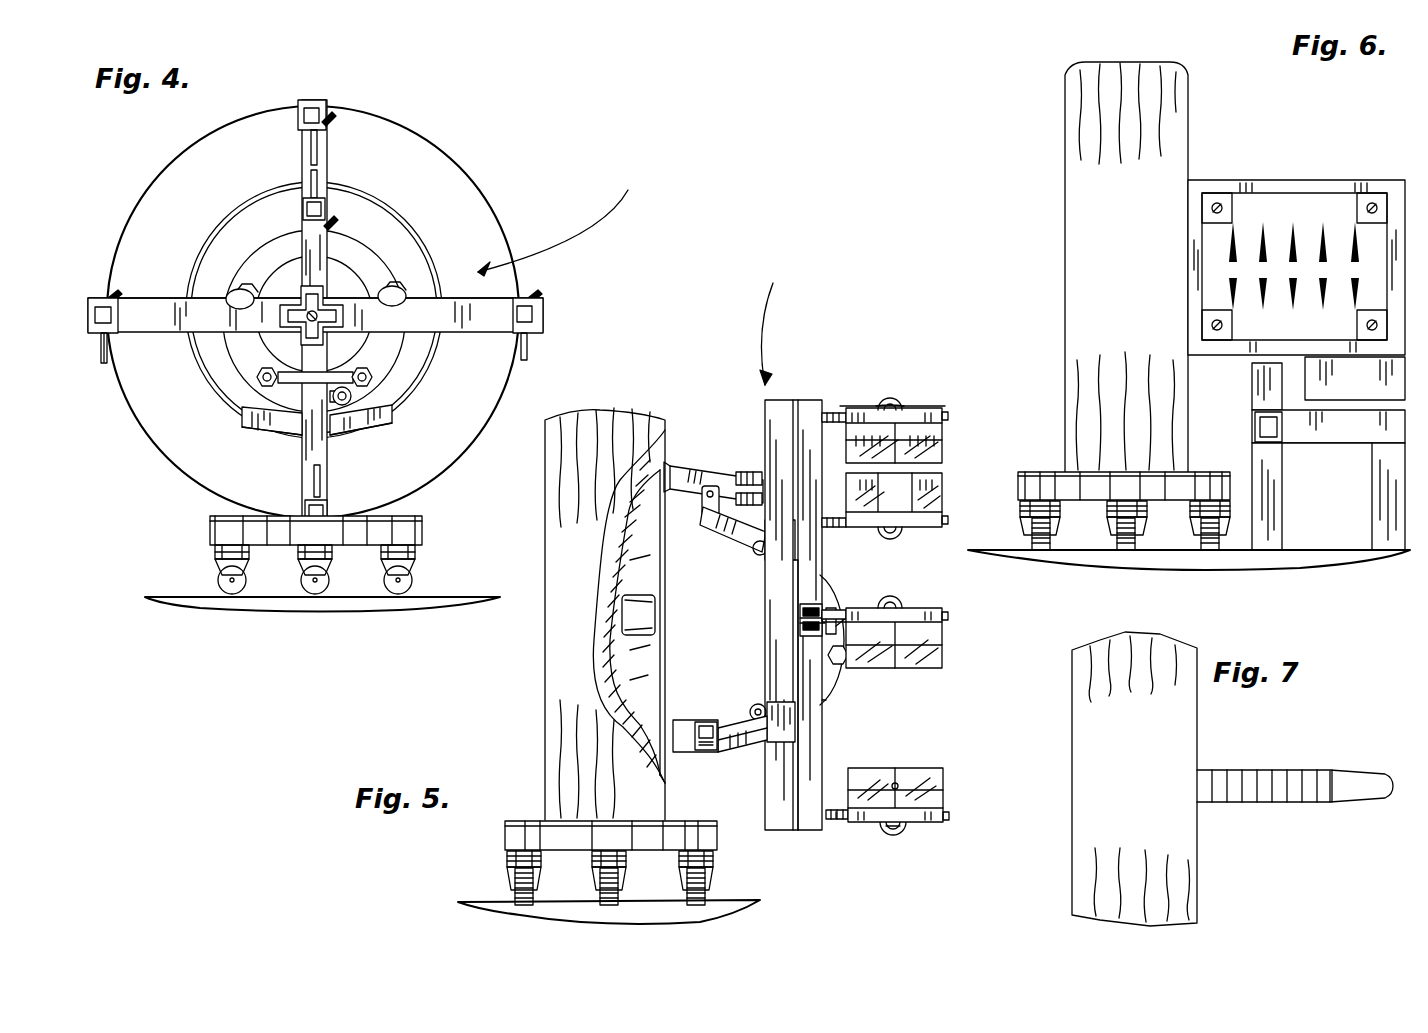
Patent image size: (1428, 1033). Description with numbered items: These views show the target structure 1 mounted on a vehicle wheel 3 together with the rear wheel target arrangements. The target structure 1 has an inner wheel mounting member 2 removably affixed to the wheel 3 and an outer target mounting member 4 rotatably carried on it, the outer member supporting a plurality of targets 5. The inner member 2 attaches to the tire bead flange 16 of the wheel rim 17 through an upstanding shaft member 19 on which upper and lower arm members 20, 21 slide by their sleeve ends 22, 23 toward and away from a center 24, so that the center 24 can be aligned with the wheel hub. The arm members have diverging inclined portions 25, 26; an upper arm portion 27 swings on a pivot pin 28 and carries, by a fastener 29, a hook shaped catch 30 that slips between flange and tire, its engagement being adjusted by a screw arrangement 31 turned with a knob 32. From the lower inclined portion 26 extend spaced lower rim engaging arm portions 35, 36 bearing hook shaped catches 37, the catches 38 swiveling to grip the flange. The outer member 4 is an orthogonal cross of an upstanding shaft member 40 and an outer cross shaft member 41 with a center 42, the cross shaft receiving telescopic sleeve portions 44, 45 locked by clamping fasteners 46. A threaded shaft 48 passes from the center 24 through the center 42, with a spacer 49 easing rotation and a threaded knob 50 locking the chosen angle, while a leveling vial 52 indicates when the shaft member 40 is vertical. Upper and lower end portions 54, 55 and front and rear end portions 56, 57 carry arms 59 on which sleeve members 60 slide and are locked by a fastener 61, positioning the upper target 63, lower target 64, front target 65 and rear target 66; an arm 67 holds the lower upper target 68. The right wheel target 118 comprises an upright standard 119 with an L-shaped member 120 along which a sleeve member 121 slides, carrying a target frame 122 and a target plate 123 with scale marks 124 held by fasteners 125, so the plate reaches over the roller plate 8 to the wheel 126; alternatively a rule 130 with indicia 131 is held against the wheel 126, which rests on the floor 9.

In FIG. 4, the target structure 1 is at (561, 219).
In FIG. 5, the target structure 1 is at (773, 321).
In FIG. 5, the inner wheel mounting member 2 is at (795, 400).
In FIG. 4, the wheel 3 is at (452, 168).
In FIG. 4, the outer target mounting member 4 is at (478, 340).
In FIG. 5, the outer target mounting member 4 is at (828, 565).
In FIG. 4, the targets 5 is at (332, 143).
In FIG. 5, the targets 5 is at (914, 405).
In FIG. 4, the roller plate 8 is at (210, 535).
In FIG. 5, the roller plate 8 is at (505, 828).
In FIG. 6, the roller plate 8 is at (1018, 490).
In FIG. 4, the floor 9 is at (440, 597).
In FIG. 5, the floor 9 is at (485, 902).
In FIG. 6, the floor 9 is at (998, 550).
In FIG. 4, the tire bead flange 16 is at (405, 410).
In FIG. 5, the tire bead flange 16 is at (665, 783).
In FIG. 4, the wheel rim 17 is at (383, 228).
In FIG. 5, the wheel rim 17 is at (640, 552).
In FIG. 5, the shaft member 19 is at (795, 610).
In FIG. 5, the upper arm member 20 is at (712, 522).
In FIG. 4, the lower arm member 21 is at (338, 432).
In FIG. 5, the lower arm member 21 is at (750, 725).
In FIG. 5, the sleeve end 22 is at (770, 560).
In FIG. 5, the sleeve end 23 is at (770, 702).
In FIG. 5, the center 24 is at (785, 630).
In FIG. 5, the inclined portion 25 is at (740, 545).
In FIG. 5, the inclined portion 26 is at (745, 748).
In FIG. 5, the upper arm portion 27 is at (705, 500).
In FIG. 5, the pivot pin 28 is at (718, 490).
In FIG. 5, the fastener 29 is at (705, 470).
In FIG. 5, the catch 30 is at (640, 478).
In FIG. 5, the screw arrangement 31 is at (770, 410).
In FIG. 5, the knob 32 is at (760, 400).
In FIG. 4, the lower rim engaging arm portion 35 is at (255, 432).
In FIG. 4, the lower rim engaging arm portion 36 is at (370, 432).
In FIG. 4, the hook shaped catches 37 is at (262, 432).
In FIG. 5, the hook shaped catches 37 is at (686, 752).
In FIG. 5, the catches 38 is at (686, 720).
In FIG. 4, the upstanding shaft member 40 is at (295, 290).
In FIG. 5, the upstanding shaft member 40 is at (832, 700).
In FIG. 4, the outer cross shaft member 41 is at (256, 362).
In FIG. 5, the outer cross shaft member 41 is at (826, 600).
In FIG. 4, the center 42 is at (232, 290).
In FIG. 4, the sleeve portion 44 is at (158, 334).
In FIG. 5, the sleeve portion 44 is at (830, 650).
In FIG. 4, the sleeve portion 45 is at (544, 300).
In FIG. 4, the clamping fasteners 46 is at (400, 290).
In FIG. 4, the threaded shaft 48 is at (335, 326).
In FIG. 5, the spacer 49 is at (840, 660).
In FIG. 4, the threaded knob 50 is at (302, 338).
In FIG. 5, the threaded knob 50 is at (845, 612).
In FIG. 4, the leveling vial 52 is at (372, 380).
In FIG. 5, the leveling vial 52 is at (848, 658).
In FIG. 4, the upper end portion 54 is at (328, 112).
In FIG. 5, the upper end portion 54 is at (828, 412).
In FIG. 4, the lower end portion 55 is at (330, 510).
In FIG. 5, the lower end portion 55 is at (830, 822).
In FIG. 4, the front end portion 56 is at (112, 298).
In FIG. 4, the rear end portion 57 is at (548, 328).
In FIG. 4, the arms 59 is at (545, 313).
In FIG. 5, the arms 59 is at (886, 405).
In FIG. 4, the sleeve members 60 is at (96, 322).
In FIG. 5, the sleeve members 60 is at (938, 406).
In FIG. 4, the fastener 61 is at (116, 294).
In FIG. 5, the fastener 61 is at (893, 834).
In FIG. 4, the upper target 63 is at (303, 152).
In FIG. 5, the upper target 63 is at (945, 448).
In FIG. 4, the lower target 64 is at (313, 478).
In FIG. 5, the lower target 64 is at (943, 780).
In FIG. 4, the front target 65 is at (102, 362).
In FIG. 4, the rear target 66 is at (532, 346).
In FIG. 5, the rear target 66 is at (945, 648).
In FIG. 4, the arm 67 is at (327, 208).
In FIG. 5, the arm 67 is at (828, 527).
In FIG. 5, the lower upper target 68 is at (942, 485).
In FIG. 6, the right wheel target 118 is at (1337, 182).
In FIG. 6, the upright standard 119 is at (1372, 518).
In FIG. 6, the L-shaped member 120 is at (1252, 383).
In FIG. 6, the sleeve member 121 is at (1380, 400).
In FIG. 6, the target frame 122 is at (1240, 192).
In FIG. 6, the target plate 123 is at (1318, 195).
In FIG. 6, the scale marks 124 is at (1252, 192).
In FIG. 6, the fasteners 125 is at (1355, 443).
In FIG. 6, the wheel 126 is at (1065, 289).
In FIG. 7, the wheel 126 is at (1072, 722).
In FIG. 7, the rule 130 is at (1328, 770).
In FIG. 7, the indicia 131 is at (1330, 782).